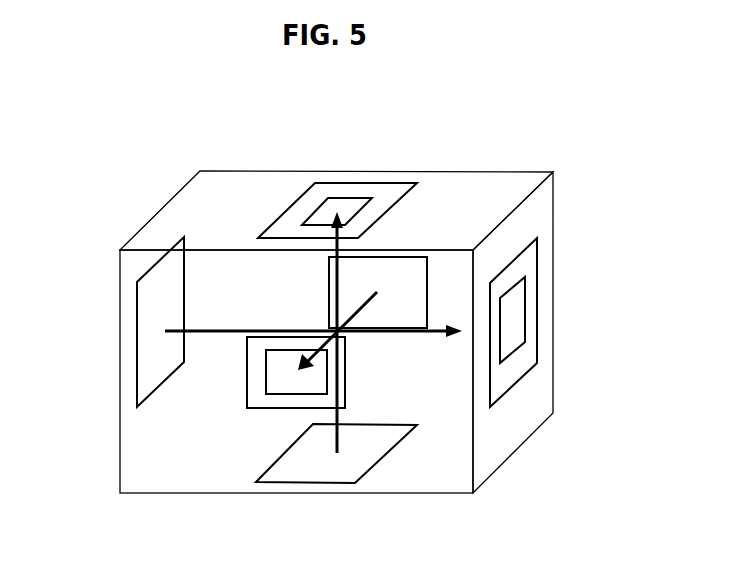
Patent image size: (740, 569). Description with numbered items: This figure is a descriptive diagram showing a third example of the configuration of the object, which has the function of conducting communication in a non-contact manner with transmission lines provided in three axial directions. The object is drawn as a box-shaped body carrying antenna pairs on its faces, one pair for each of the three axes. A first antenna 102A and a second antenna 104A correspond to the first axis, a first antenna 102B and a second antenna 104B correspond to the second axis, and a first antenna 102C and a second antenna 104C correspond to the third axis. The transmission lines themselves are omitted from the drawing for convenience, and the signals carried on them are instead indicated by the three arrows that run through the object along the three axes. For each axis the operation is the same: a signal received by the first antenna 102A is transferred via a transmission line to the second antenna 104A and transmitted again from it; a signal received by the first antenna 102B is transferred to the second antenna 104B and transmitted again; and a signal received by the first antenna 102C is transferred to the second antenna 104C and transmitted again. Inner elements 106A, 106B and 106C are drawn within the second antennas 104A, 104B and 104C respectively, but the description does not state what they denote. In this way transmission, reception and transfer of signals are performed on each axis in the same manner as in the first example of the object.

The first antenna 102A is at (138, 338).
The first antenna 102B is at (400, 256).
The first antenna 102C is at (320, 483).
The second antenna 104A is at (537, 253).
The second antenna 104B is at (258, 408).
The second antenna 104C is at (290, 205).
The inner coil (right face) 106A is at (525, 306).
The inner coil (front face) 106B is at (290, 394).
The inner coil (top face) 106C is at (350, 198).